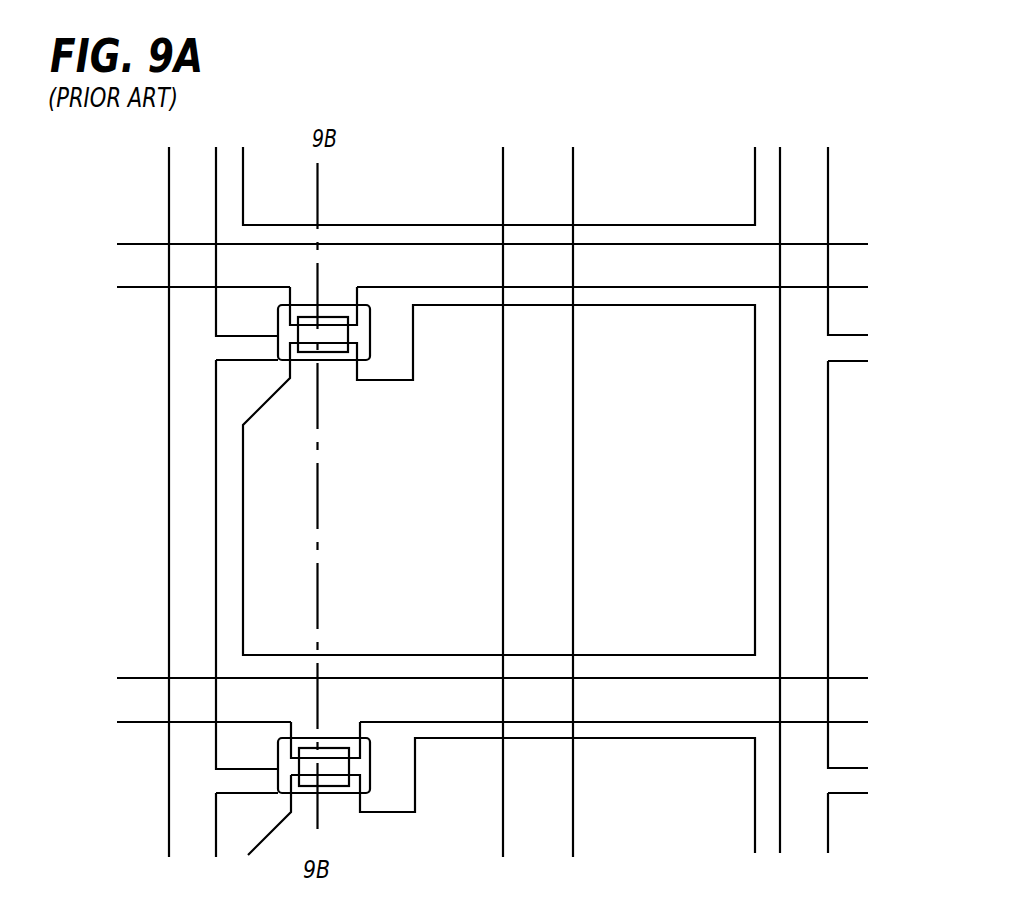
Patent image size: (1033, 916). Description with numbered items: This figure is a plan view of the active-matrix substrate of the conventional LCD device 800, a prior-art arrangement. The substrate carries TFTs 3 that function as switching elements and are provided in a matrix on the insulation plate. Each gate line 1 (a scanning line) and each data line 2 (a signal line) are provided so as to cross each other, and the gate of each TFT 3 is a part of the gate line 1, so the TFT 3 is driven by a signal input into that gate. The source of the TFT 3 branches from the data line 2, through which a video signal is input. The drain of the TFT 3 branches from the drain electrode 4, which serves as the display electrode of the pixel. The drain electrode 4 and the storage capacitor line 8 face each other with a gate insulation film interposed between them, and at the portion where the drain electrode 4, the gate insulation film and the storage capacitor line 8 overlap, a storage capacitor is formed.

The gate line 1 is at (196, 183).
The data line 2 is at (127, 268).
The TFT 3 is at (307, 333).
The drain electrode 4 is at (672, 332).
The storage capacitor line 8 is at (550, 175).
The conventional LCD device 800 is at (742, 62).